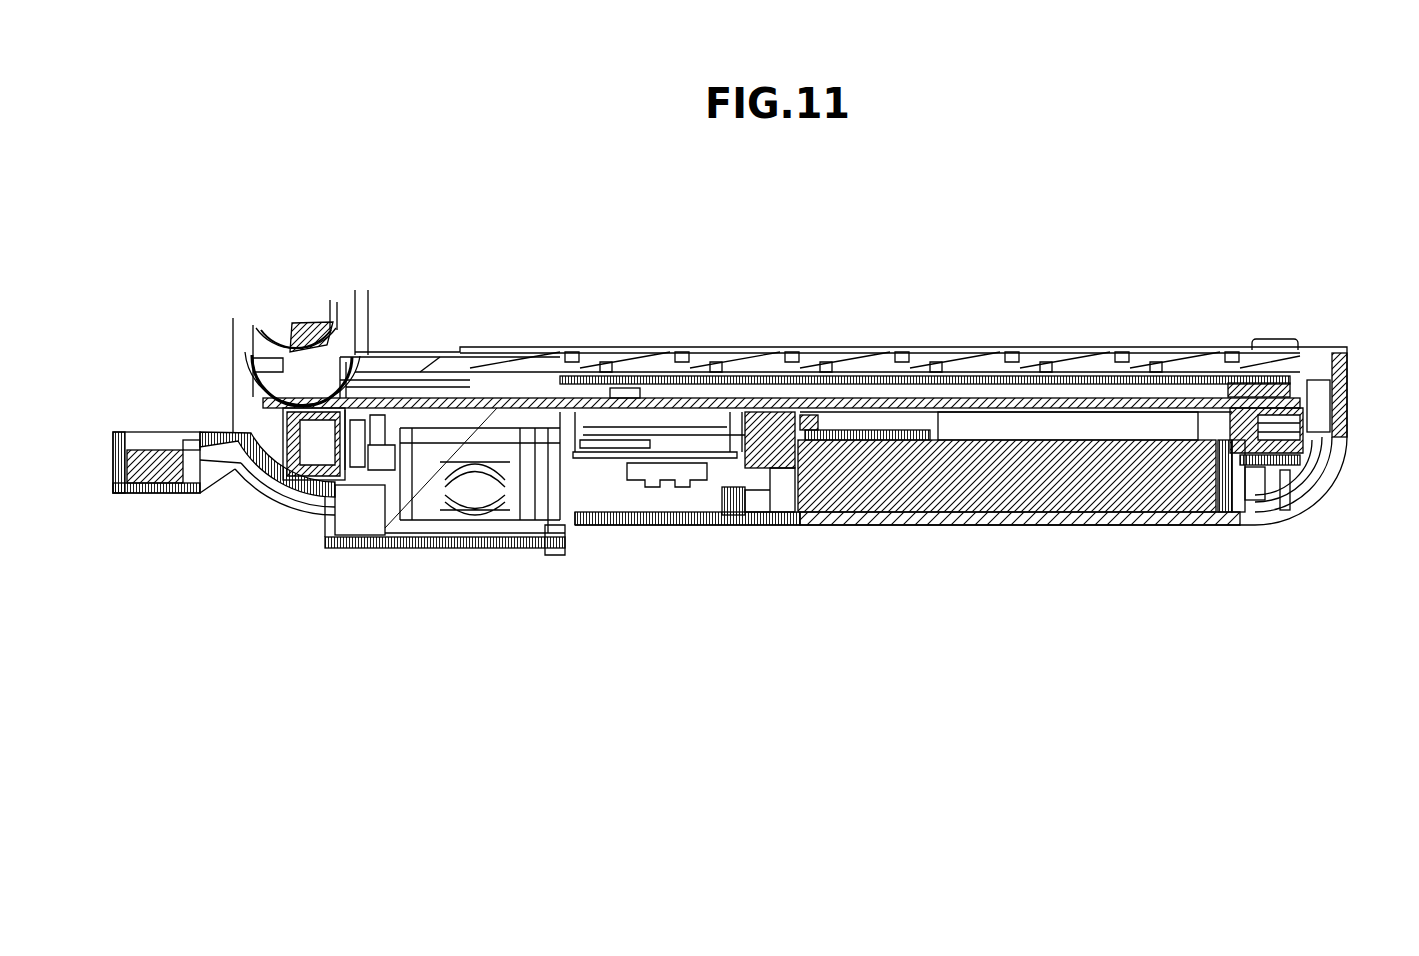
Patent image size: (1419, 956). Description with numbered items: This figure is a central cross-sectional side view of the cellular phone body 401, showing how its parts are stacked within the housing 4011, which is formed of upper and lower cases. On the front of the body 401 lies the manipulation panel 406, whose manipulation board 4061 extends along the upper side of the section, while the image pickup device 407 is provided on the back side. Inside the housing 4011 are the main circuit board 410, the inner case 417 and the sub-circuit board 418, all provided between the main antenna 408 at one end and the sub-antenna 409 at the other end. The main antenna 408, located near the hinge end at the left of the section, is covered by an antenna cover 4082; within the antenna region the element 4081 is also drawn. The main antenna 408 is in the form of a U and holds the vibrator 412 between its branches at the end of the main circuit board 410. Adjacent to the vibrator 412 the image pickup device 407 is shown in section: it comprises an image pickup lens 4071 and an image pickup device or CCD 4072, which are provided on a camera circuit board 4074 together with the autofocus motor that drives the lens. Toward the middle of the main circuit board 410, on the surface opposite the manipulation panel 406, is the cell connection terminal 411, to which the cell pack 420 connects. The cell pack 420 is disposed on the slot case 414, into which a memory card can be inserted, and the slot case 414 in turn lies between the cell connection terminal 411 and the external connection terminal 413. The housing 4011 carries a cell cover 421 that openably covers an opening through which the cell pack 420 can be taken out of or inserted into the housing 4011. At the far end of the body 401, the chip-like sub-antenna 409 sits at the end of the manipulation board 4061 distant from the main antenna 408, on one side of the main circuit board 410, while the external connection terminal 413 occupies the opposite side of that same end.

The body 401 is at (978, 238).
The manipulation panel 406 is at (827, 311).
The manipulation board 4061 is at (925, 380).
The main circuit board 410 is at (897, 396).
The main antenna 408 is at (328, 443).
The seal member 4081 is at (163, 452).
The antenna cover 4082 is at (123, 498).
The vibrator 412 is at (307, 465).
The image pickup device 407 is at (445, 537).
The inner case 417 is at (392, 515).
The image pickup lens 4071 is at (452, 503).
The image pickup device (CCD) 4072 is at (507, 512).
The camera circuit board 4074 is at (583, 478).
The sub-circuit board 418 is at (660, 457).
The housing 4011 is at (727, 522).
The cell connection terminal 411 is at (777, 463).
The cell cover 421 is at (955, 526).
The cell pack 420 is at (1063, 475).
The slot case 414 is at (1118, 428).
The sub-antenna 409 is at (1340, 382).
The external connection terminal 413 is at (1332, 443).